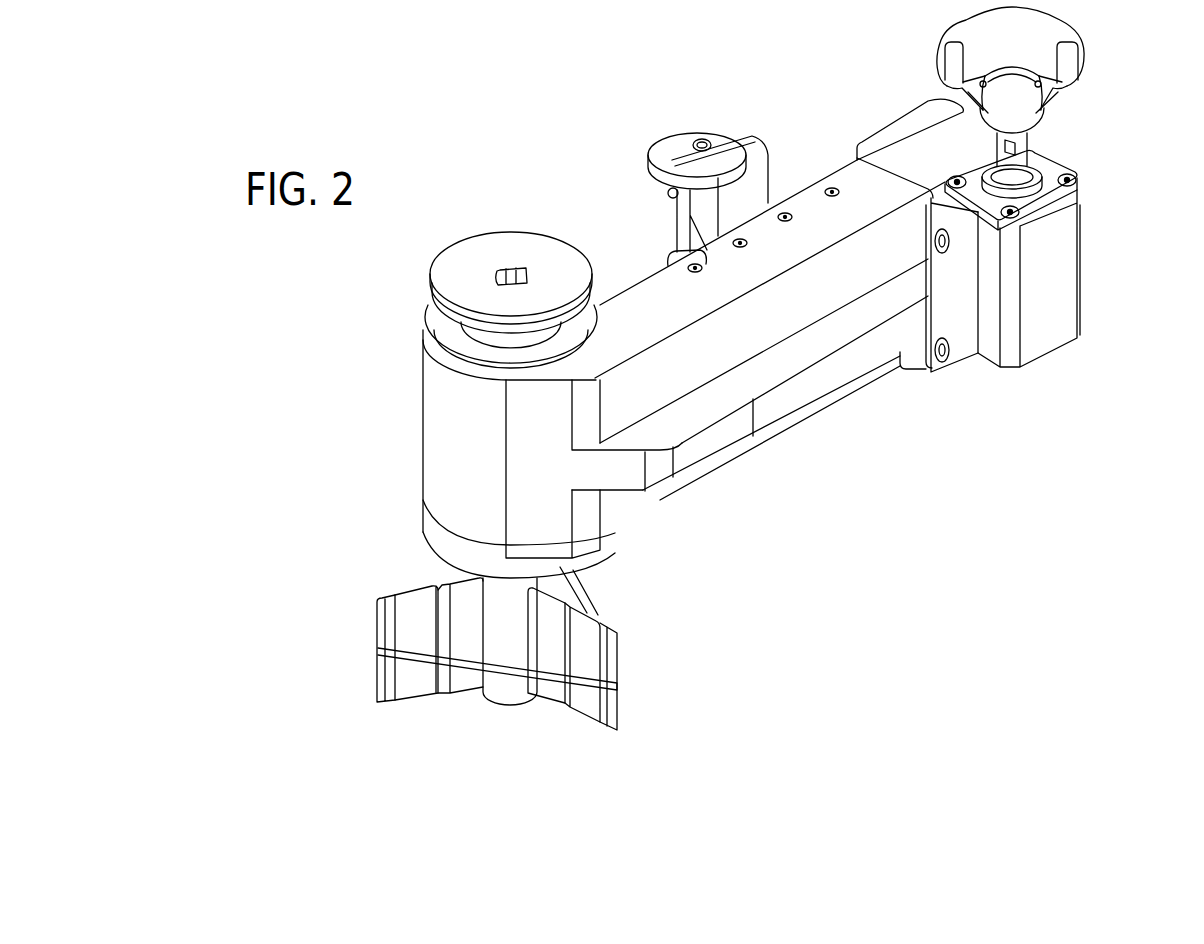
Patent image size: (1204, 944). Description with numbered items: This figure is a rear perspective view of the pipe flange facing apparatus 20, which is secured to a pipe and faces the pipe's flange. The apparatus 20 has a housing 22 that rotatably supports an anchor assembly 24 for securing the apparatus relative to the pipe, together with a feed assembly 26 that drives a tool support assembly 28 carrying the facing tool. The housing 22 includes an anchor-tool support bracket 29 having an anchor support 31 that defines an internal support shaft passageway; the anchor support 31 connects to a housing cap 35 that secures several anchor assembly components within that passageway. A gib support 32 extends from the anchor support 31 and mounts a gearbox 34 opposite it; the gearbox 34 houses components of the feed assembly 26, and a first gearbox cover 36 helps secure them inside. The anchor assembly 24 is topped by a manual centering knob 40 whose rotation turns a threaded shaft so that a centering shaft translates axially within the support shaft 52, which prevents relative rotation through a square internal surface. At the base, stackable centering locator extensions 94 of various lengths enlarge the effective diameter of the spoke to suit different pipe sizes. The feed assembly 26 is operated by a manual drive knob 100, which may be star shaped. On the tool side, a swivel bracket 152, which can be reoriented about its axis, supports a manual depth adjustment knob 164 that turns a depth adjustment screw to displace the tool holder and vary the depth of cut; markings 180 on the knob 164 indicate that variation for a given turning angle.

The pipe flange facing apparatus 20 is at (541, 103).
The housing 22 is at (727, 450).
The anchor assembly 24 is at (650, 605).
The feed assembly 26 is at (1068, 138).
The tool support assembly 28 is at (790, 160).
The anchor-tool support bracket 29 is at (628, 296).
The anchor support 31 is at (423, 444).
The gib support 32 is at (813, 422).
The gearbox 34 is at (1083, 254).
The housing cap 35 is at (423, 520).
The first gearbox cover 36 is at (1065, 163).
The manual centering knob 40 is at (503, 230).
The support shaft 52 is at (512, 695).
The stackable centering locator extensions 94 is at (420, 702).
The manual drive knob 100 is at (940, 50).
The swivel bracket 152 is at (770, 152).
The manual depth adjustment knob 164 is at (668, 142).
The markings 180 is at (648, 160).